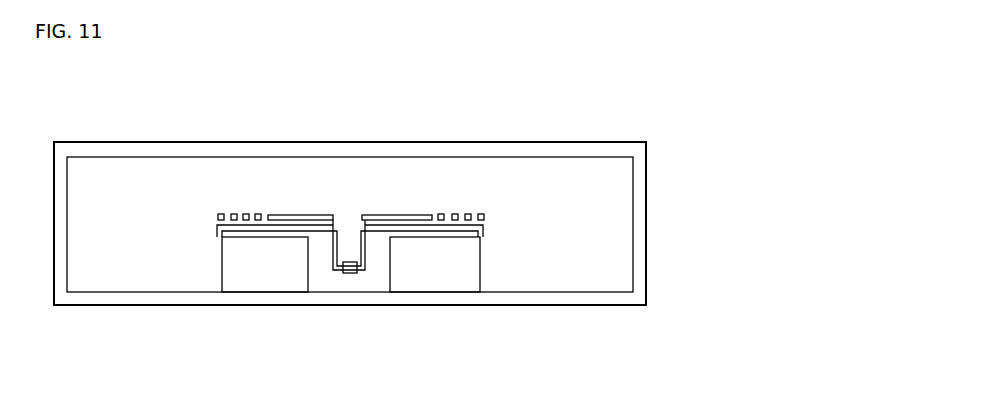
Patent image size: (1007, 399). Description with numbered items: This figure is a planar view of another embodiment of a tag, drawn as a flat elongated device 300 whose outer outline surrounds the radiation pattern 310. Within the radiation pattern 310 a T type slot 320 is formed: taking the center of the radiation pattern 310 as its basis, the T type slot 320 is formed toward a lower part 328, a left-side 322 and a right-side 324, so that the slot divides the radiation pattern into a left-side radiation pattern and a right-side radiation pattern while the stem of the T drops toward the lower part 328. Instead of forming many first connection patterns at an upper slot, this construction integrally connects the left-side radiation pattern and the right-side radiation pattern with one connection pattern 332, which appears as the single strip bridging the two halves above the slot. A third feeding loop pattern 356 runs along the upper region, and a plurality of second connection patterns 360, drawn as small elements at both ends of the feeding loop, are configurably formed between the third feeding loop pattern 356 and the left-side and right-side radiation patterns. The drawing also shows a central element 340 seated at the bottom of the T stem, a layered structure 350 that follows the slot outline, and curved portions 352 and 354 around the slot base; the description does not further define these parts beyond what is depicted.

The electronic device 300 is at (643, 186).
The radiation pattern 310 is at (578, 152).
The T type slot 320 is at (318, 280).
The left-side 322 is at (220, 228).
The right-side 324 is at (481, 237).
The lower part 328 is at (377, 274).
The connection pattern 332 is at (350, 185).
The connector 340 is at (350, 274).
The printed circuit board 350 is at (333, 212).
The bent portion 352 is at (362, 276).
The curved portion 354 is at (335, 247).
The third feeding loop pattern 356 is at (405, 218).
The second connection patterns 360 is at (250, 214).